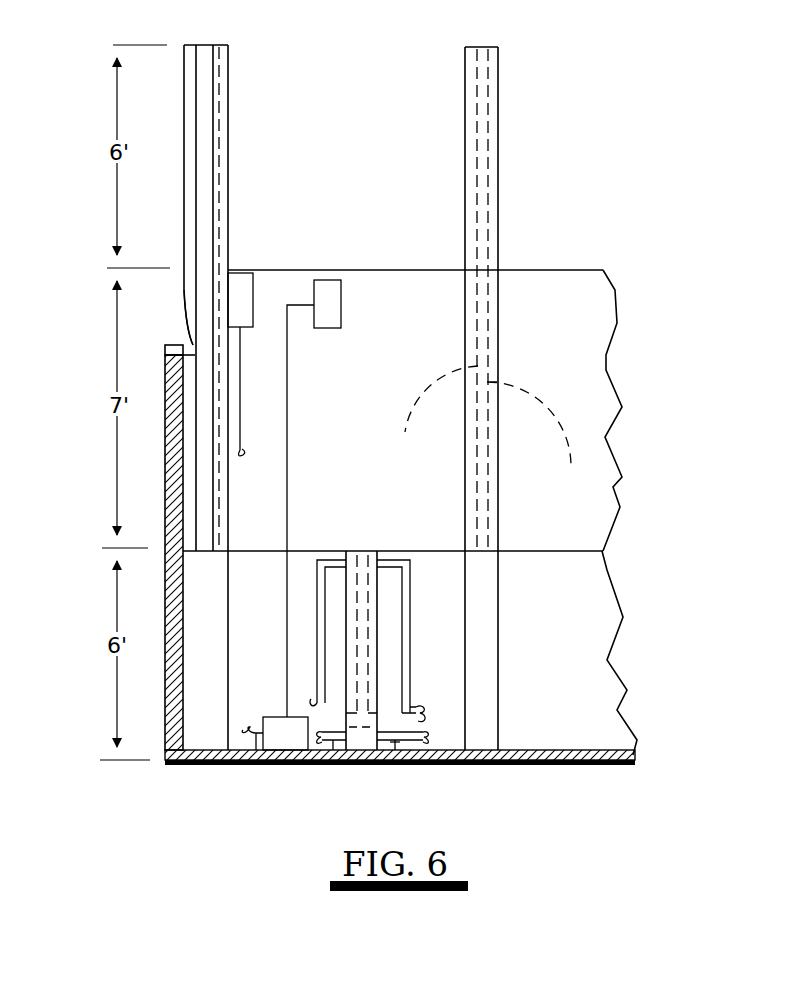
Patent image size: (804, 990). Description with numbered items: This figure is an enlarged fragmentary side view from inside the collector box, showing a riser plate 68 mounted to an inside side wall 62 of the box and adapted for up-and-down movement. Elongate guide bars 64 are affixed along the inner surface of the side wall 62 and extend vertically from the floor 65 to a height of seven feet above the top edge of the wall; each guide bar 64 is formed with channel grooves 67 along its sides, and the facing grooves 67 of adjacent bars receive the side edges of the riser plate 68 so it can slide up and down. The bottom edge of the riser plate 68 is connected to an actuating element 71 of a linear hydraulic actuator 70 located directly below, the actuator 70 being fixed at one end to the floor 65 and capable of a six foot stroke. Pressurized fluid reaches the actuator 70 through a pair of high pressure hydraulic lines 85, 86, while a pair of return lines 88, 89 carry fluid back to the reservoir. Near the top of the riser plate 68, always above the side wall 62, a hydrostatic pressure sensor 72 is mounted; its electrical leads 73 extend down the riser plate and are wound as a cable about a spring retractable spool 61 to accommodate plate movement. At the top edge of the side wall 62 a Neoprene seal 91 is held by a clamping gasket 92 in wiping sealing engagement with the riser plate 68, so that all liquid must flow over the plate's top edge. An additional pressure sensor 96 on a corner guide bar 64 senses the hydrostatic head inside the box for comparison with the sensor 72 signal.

The spring retractable spool 61 is at (277, 730).
The side wall 62 is at (164, 472).
The guide bar 64 is at (227, 111).
The floor 65 is at (583, 750).
The channel groove 67 is at (493, 432).
The riser plate 68 is at (420, 258).
The linear hydraulic actuator 70 is at (390, 656).
The actuating element 71 is at (363, 617).
The hydrostatic pressure sensor 72 is at (327, 313).
The electrical leads 73 is at (240, 415).
The high pressure hydraulic line 85 is at (317, 643).
The high pressure hydraulic line 86 is at (332, 762).
The hydraulic fluid return line 88 is at (404, 686).
The hydraulic fluid return line 89 is at (393, 762).
The seal 91 is at (186, 295).
The clamping gasket 92 is at (177, 345).
The pressure sensor 96 is at (236, 271).